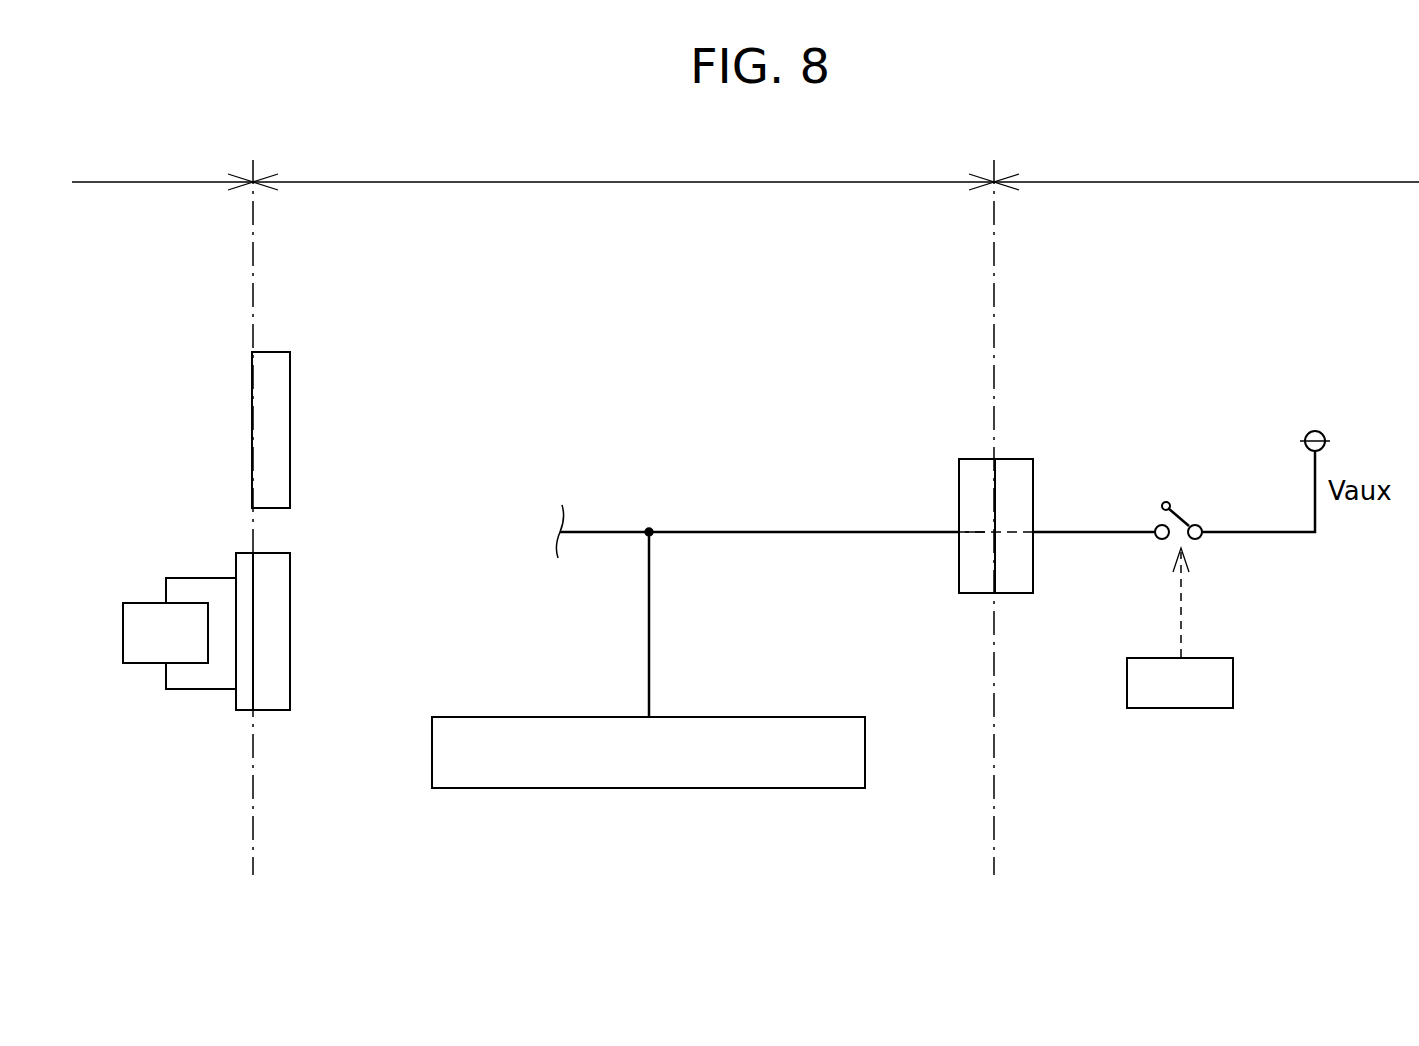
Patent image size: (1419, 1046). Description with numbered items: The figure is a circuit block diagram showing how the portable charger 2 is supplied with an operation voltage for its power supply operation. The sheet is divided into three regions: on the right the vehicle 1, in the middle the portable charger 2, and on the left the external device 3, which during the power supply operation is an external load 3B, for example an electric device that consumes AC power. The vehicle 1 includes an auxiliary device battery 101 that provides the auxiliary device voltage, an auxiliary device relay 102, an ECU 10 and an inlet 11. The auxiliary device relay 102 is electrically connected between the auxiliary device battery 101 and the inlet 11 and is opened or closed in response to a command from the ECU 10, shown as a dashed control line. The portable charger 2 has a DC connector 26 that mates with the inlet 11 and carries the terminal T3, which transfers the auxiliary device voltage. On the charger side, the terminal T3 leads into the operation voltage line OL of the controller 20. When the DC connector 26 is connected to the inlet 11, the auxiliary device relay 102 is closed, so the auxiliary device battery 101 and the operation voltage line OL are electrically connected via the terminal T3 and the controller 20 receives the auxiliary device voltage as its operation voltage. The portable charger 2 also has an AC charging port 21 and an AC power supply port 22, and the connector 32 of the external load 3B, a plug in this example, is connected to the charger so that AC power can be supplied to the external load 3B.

The vehicle 1 is at (1206, 168).
The portable charger 2 is at (623, 168).
The external device 3 is at (162, 168).
The external load 3B is at (150, 603).
The ECU 10 is at (1203, 658).
The inlet 11 is at (1015, 459).
The controller 20 is at (787, 718).
The AC charging port 21 is at (274, 352).
The AC power supply port 22 is at (278, 712).
The DC connector 26 is at (978, 459).
The connector 32 is at (240, 553).
The auxiliary device battery 101 is at (1325, 432).
The auxiliary device relay 102 is at (1180, 502).
The operation voltage line OL is at (766, 532).
The terminal T3 is at (973, 530).